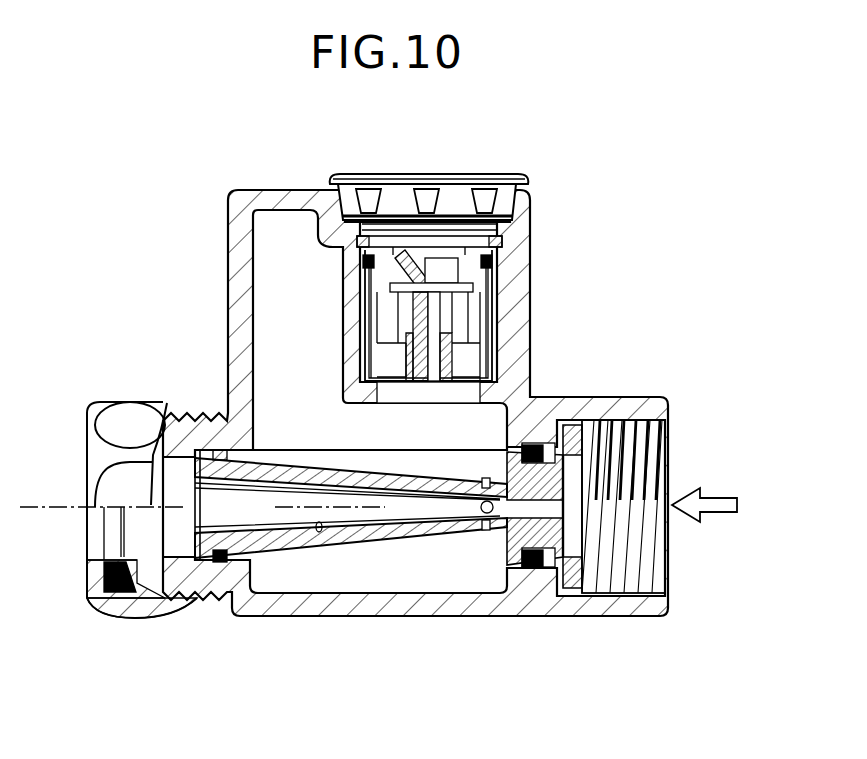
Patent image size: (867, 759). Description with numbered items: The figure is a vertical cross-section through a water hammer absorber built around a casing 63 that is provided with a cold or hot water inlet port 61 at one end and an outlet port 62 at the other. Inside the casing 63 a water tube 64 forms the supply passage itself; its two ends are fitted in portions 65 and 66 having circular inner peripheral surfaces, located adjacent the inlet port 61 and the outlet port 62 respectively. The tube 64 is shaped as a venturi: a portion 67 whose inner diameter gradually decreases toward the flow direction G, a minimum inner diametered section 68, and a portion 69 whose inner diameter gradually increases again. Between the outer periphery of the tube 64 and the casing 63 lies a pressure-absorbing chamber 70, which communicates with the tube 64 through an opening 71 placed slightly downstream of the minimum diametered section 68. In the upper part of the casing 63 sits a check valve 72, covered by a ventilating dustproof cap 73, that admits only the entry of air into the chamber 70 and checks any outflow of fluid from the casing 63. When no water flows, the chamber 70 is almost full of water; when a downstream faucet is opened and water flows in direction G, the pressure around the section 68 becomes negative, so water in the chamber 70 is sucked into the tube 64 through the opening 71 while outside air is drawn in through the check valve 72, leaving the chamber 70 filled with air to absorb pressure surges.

The inlet port 61 is at (640, 596).
The outlet port 62 is at (137, 560).
The casing 63 is at (384, 618).
The water tube 64 is at (327, 465).
The fitting portion 65 is at (549, 568).
The fitting portion 66 is at (215, 566).
The decreasing-diameter portion 67 is at (556, 468).
The minimum inner diametered section 68 is at (508, 540).
The increasing-diameter portion 69 is at (320, 532).
The pressure-absorbing chamber 70 is at (277, 353).
The opening 71 is at (484, 472).
The check valve 72 is at (470, 328).
The knob 73 is at (463, 174).
The direction of water flow G is at (718, 498).